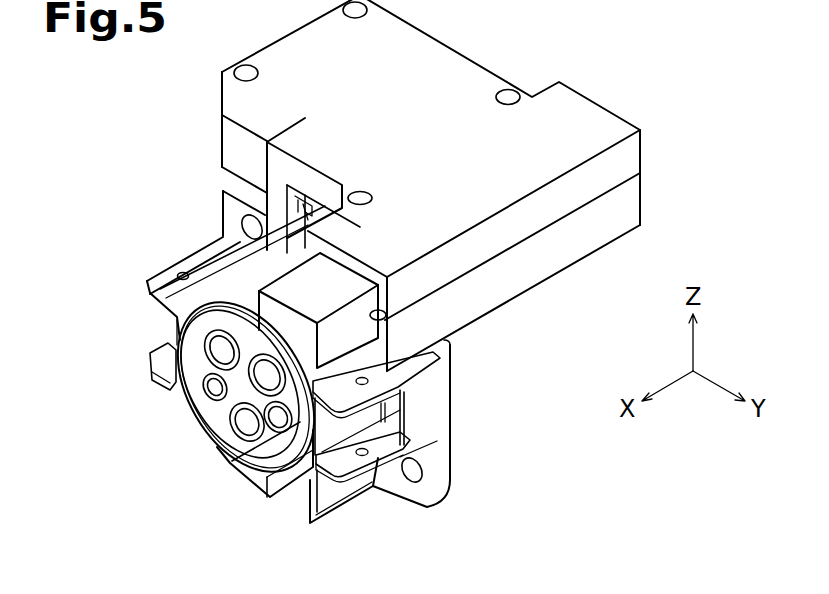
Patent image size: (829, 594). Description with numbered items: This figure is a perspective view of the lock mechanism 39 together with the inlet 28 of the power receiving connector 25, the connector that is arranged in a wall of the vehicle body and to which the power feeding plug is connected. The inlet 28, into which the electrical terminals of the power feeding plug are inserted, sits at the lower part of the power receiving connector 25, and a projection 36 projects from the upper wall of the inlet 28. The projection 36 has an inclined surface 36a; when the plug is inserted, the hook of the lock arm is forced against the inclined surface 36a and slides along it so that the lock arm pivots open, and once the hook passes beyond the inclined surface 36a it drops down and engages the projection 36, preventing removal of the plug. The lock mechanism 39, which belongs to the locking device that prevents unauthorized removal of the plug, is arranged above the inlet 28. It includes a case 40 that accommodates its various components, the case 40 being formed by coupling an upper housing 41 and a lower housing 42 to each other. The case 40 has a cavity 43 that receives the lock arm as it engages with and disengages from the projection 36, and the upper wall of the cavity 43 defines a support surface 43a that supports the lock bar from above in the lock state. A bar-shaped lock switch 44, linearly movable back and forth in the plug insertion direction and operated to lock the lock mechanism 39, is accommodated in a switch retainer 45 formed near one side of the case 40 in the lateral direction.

The power receiving connector 25 is at (440, 526).
The inlet 28 is at (205, 412).
The projection 36 is at (240, 238).
The inclined surface 36a is at (237, 273).
The lock mechanism 39 is at (608, 104).
The case 40 is at (166, 77).
The upper housing 41 is at (228, 96).
The lower housing 42 is at (228, 132).
The cavity 43 is at (290, 186).
The support surface 43a is at (311, 200).
The lock switch 44 is at (347, 268).
The switch retainer 45 is at (387, 316).